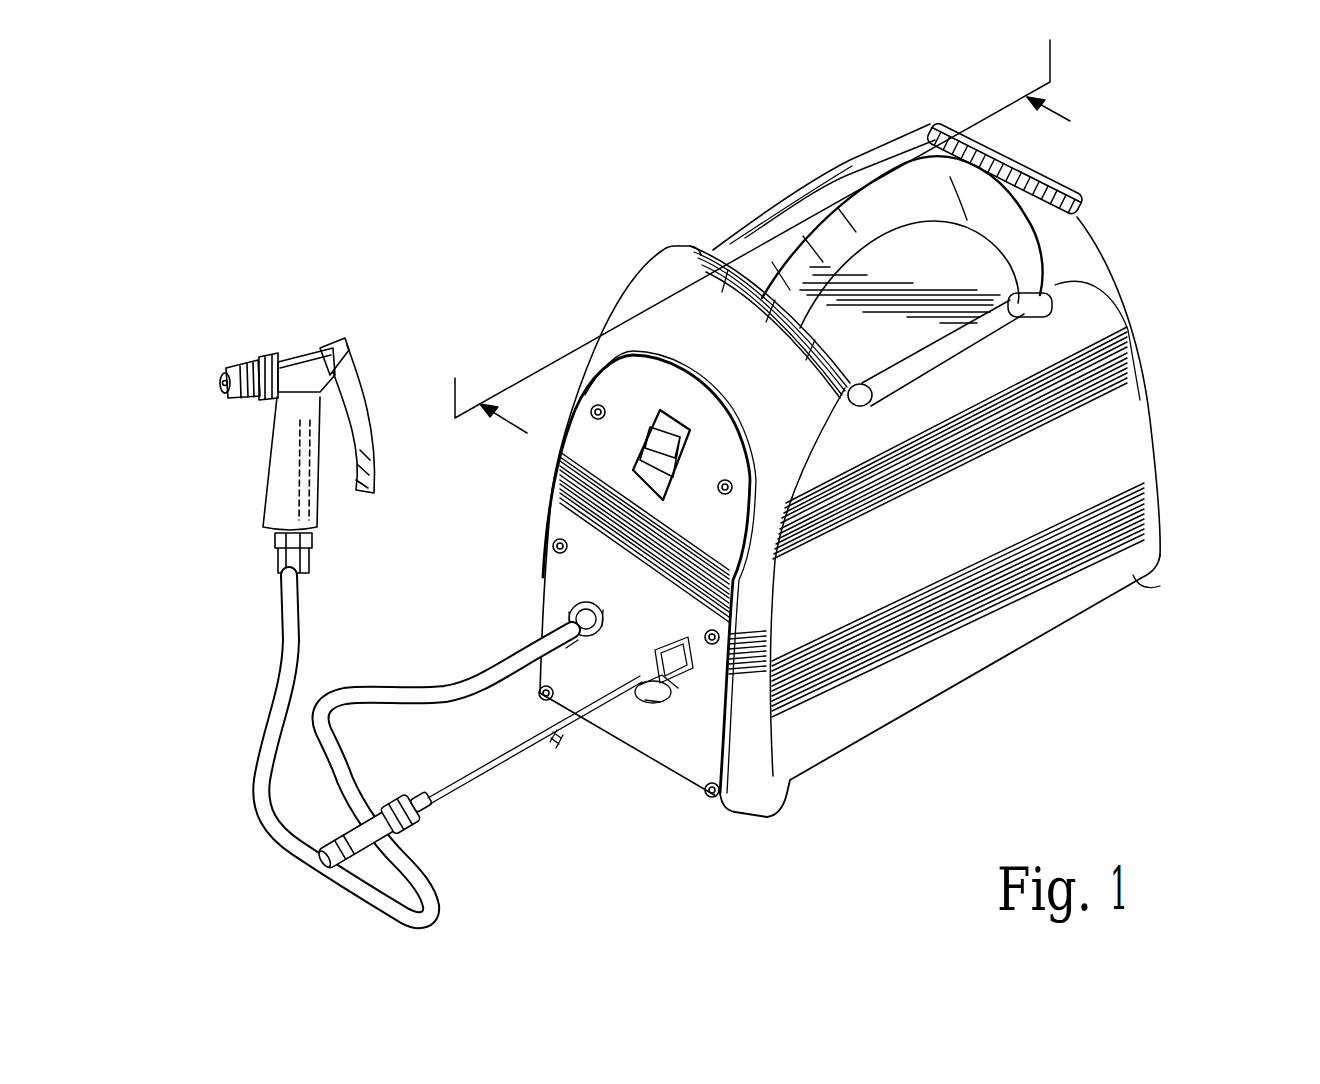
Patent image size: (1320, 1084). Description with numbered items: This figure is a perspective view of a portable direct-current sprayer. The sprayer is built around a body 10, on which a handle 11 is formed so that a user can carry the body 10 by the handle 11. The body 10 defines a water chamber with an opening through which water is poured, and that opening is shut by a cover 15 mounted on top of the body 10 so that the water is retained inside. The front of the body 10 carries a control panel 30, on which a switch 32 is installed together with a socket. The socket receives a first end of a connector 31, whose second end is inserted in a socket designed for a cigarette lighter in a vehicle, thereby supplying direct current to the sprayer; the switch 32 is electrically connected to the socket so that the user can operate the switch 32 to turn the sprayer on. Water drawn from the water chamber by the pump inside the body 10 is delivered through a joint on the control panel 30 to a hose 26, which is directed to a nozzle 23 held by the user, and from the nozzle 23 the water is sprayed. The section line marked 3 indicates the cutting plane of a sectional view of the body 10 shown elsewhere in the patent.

The section line 3- 3 is at (776, 261).
The body 10 is at (1152, 492).
The handle 11 is at (850, 207).
The cover 15 is at (1077, 193).
The nozzle 23 is at (283, 483).
The hose 26 is at (290, 688).
The control panel 30 is at (610, 387).
The connector 31 is at (317, 847).
The switch 32 is at (657, 410).